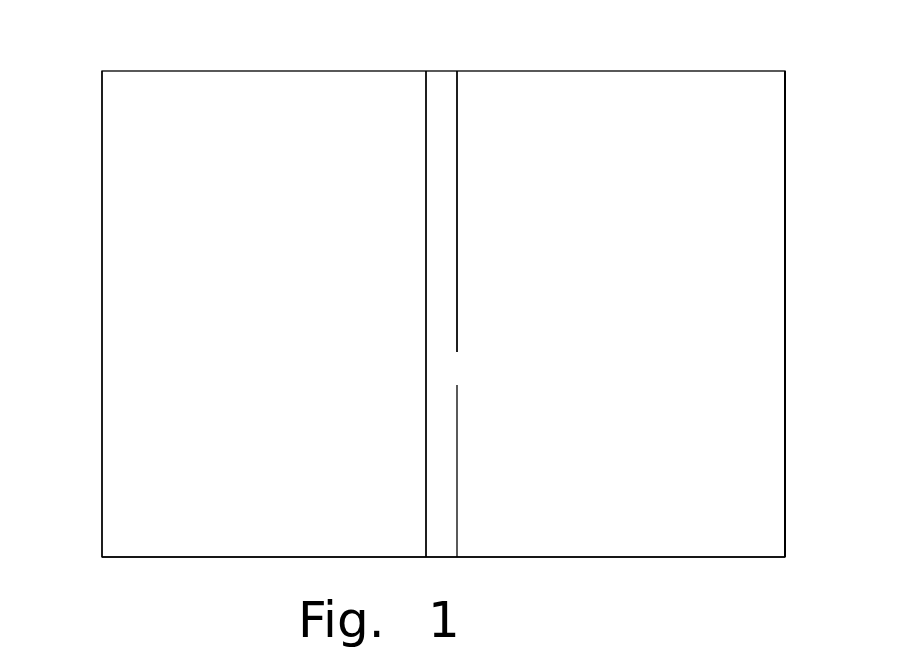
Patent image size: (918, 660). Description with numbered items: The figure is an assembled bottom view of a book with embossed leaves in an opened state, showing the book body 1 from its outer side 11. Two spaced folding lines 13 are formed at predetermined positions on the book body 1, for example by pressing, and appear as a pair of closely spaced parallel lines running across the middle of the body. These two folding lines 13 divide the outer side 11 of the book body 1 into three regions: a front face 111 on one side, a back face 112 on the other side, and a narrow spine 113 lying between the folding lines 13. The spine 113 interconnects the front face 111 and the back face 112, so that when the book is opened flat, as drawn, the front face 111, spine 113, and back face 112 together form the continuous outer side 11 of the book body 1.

The book body 1 is at (121, 583).
The outer side 11 is at (128, 376).
The front face 111 is at (702, 282).
The back face 112 is at (207, 267).
The spine 113 is at (437, 167).
The folding lines 13 is at (425, 535).